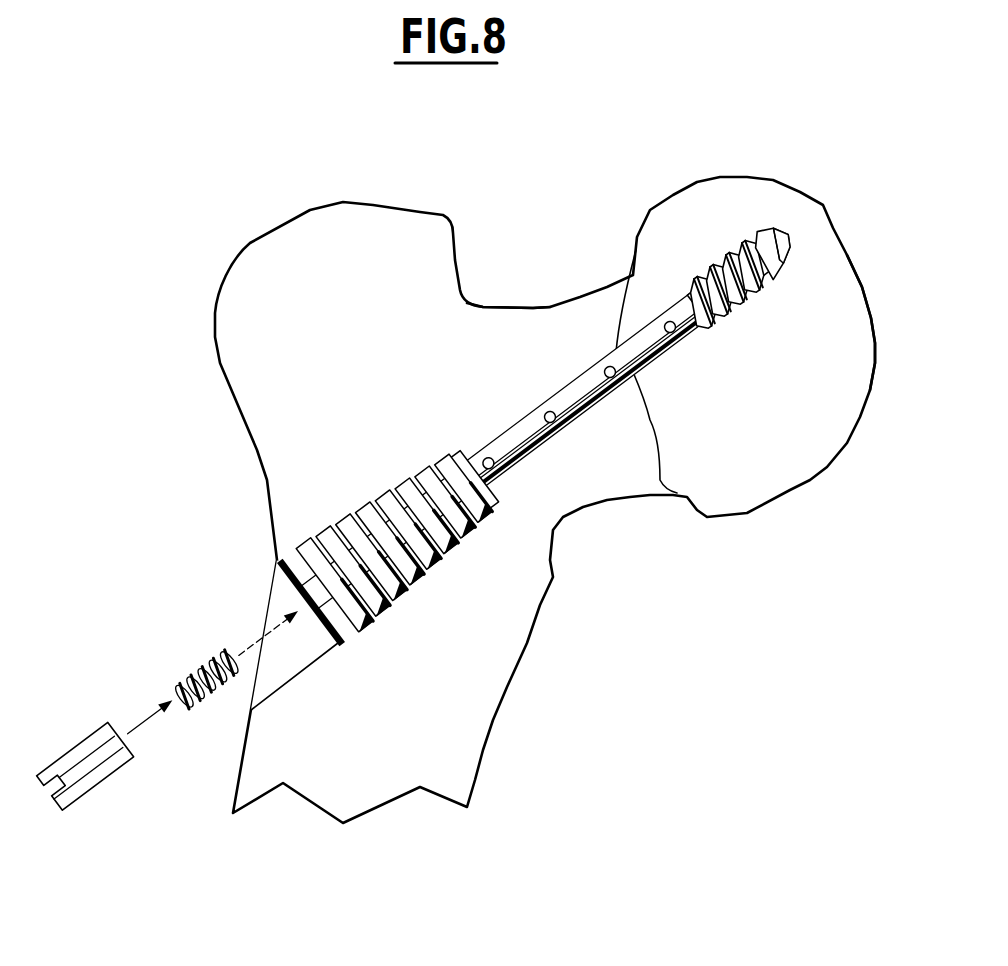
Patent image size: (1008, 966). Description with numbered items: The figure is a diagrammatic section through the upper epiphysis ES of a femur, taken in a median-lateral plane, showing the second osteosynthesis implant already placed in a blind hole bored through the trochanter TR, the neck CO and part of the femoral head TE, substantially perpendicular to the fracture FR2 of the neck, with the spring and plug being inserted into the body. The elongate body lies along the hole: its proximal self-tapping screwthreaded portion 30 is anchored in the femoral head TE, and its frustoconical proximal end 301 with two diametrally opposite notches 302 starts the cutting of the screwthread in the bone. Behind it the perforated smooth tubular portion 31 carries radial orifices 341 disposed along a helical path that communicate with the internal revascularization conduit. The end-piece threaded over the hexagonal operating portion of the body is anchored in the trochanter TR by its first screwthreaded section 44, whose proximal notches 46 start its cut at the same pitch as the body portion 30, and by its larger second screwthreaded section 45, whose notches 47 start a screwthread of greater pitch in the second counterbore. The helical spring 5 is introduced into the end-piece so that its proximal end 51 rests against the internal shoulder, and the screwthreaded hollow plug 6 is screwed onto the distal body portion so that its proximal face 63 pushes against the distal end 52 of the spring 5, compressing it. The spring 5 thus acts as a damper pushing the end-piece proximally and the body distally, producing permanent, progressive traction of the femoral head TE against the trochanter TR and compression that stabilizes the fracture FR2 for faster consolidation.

The proximal self-tapping screwthreaded tubular portion 30 is at (738, 275).
The proximal end 301 is at (774, 249).
The notches 302 is at (781, 243).
The perforated smooth tubular portion 31 is at (588, 389).
The radial orifices 341 is at (579, 395).
The first screwthreaded section 44 is at (396, 539).
The second screwthreaded section 45 is at (435, 509).
The notches 46 is at (394, 541).
The notches 47 is at (362, 563).
The helical spring 5 is at (207, 679).
The proximal end of the spring 51 is at (229, 662).
The distal end of the spring 52 is at (185, 696).
The screwthreaded hollow plug 6 is at (85, 766).
The proximal face 63 is at (84, 767).
The upper epiphysis ES is at (423, 454).
The trochanter TR is at (347, 243).
The neck of the femur CO is at (467, 337).
The femoral head TE is at (814, 392).
The fracture FR2 is at (672, 490).